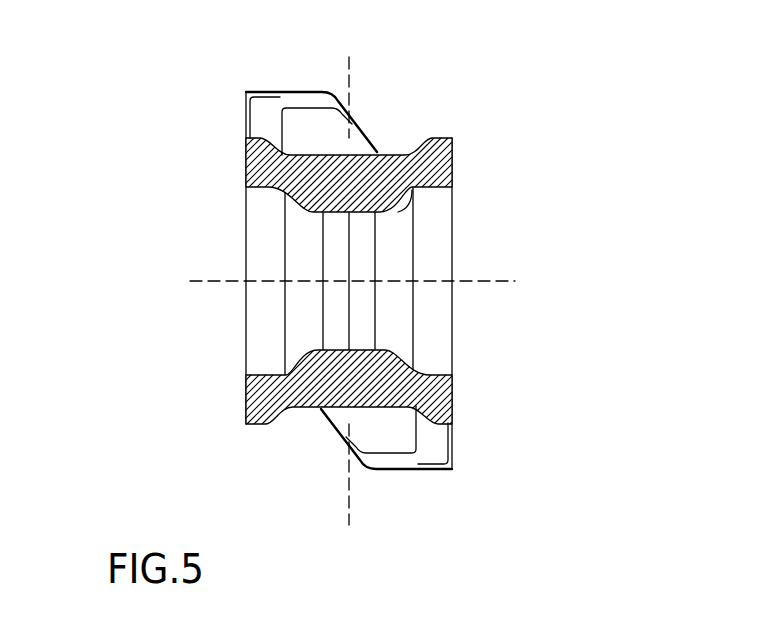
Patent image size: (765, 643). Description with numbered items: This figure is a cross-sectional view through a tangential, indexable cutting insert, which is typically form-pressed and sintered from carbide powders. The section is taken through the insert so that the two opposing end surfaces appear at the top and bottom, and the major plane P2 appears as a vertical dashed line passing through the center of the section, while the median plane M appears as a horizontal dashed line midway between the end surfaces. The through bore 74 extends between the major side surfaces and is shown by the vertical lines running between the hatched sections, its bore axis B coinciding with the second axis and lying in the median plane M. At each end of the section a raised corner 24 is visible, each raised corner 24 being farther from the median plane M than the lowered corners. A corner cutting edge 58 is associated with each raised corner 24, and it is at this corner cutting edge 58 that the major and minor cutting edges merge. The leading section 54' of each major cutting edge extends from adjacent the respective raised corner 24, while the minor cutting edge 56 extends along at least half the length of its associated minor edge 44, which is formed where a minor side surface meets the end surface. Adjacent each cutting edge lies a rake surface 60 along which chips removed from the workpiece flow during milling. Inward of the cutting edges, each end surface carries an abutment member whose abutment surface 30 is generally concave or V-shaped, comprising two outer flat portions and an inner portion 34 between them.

The raised corner 24 is at (236, 90).
The abutment surface 30 is at (298, 128).
The inner portion 34 is at (377, 150).
The minor edge 44 is at (350, 150).
The leading section 54' is at (341, 282).
The minor cutting edge 56 is at (283, 108).
The corner cutting edge 58 is at (246, 92).
The rake surface 60 is at (265, 120).
The through bore 74 is at (412, 205).
The major plane P2 is at (351, 62).
The median plane M is at (468, 281).
The bore axis B is at (208, 283).